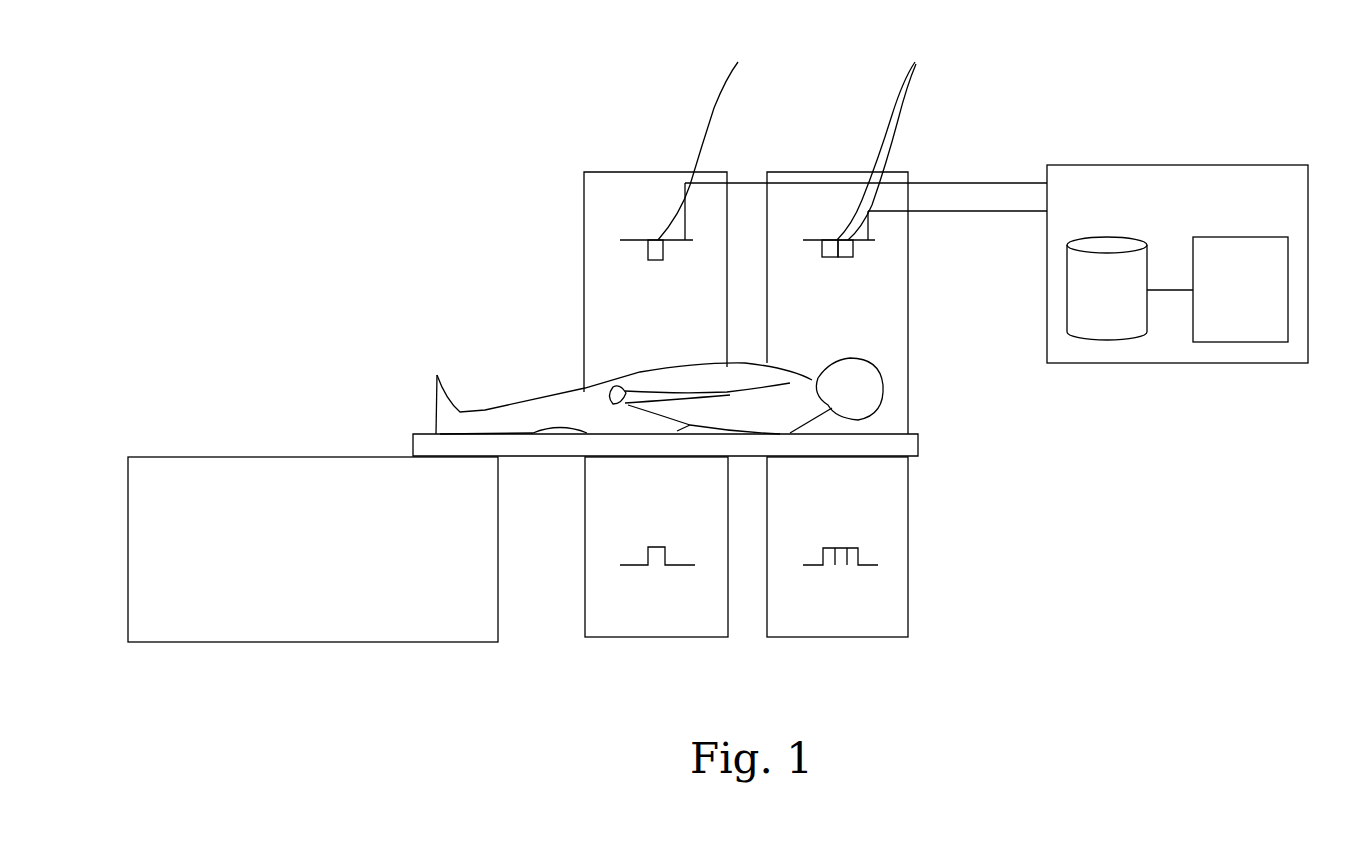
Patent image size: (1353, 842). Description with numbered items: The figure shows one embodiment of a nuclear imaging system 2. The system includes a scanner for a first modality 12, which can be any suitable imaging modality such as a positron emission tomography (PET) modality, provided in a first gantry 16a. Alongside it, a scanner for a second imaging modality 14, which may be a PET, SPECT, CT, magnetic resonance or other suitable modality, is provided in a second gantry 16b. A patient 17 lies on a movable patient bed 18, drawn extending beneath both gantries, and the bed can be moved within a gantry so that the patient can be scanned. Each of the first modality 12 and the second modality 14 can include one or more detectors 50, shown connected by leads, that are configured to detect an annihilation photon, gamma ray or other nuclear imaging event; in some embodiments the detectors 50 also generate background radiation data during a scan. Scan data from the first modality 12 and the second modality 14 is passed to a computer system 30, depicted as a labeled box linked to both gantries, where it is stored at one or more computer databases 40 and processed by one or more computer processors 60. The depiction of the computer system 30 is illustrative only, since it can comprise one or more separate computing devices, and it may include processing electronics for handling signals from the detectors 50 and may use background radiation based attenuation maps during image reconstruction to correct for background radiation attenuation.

The nuclear imaging system 2 is at (330, 241).
The first modality 12 is at (622, 240).
The second imaging modality 14 is at (855, 247).
The first gantry 16a is at (652, 168).
The second gantry 16b is at (838, 168).
The patient 17 is at (560, 393).
The movable patient bed 18 is at (422, 436).
The computer system 30 is at (1079, 164).
The computer databases 40 is at (1092, 327).
The detectors 50 is at (796, 139).
The computer processors 60 is at (1233, 308).